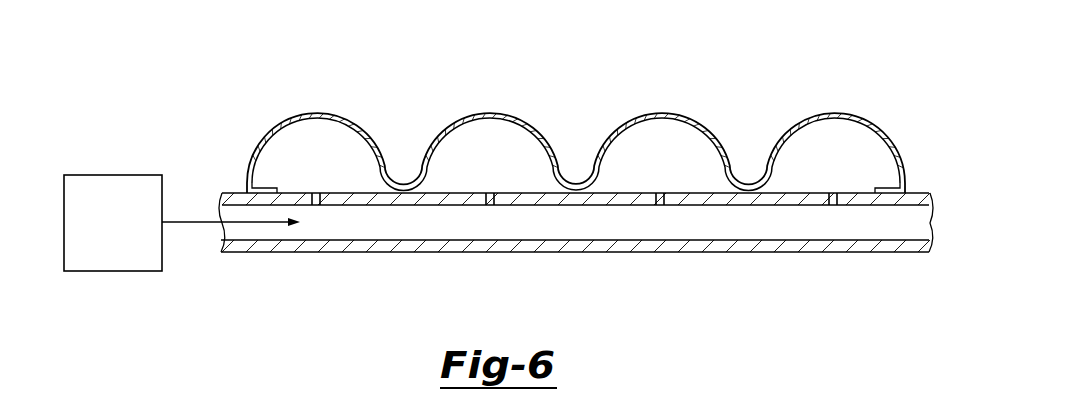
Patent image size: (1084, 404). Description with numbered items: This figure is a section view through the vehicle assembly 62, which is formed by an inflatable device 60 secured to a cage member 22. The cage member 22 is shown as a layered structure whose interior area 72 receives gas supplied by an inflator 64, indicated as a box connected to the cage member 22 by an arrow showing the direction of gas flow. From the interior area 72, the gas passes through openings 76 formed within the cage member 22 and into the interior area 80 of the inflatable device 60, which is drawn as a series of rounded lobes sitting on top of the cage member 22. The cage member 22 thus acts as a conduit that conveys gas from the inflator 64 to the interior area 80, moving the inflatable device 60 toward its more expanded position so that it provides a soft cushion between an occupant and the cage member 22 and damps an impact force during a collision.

The cage member 22 is at (345, 253).
The inflatable device 60 is at (490, 112).
The vehicle assembly 62 is at (576, 112).
The inflator 64 is at (101, 251).
The interior area of the cage member 72 is at (729, 239).
The openings 76 is at (486, 183).
The interior area of the inflatable device 80 is at (305, 171).